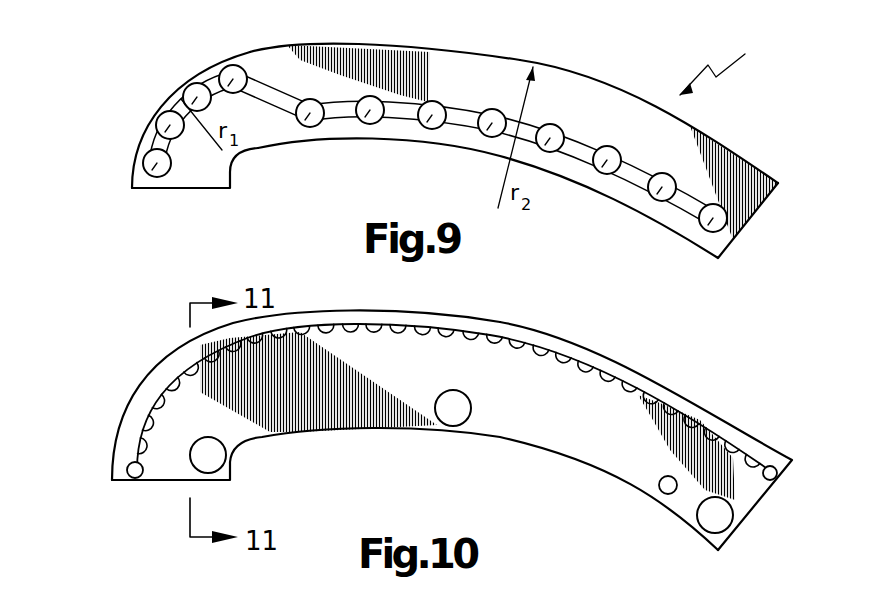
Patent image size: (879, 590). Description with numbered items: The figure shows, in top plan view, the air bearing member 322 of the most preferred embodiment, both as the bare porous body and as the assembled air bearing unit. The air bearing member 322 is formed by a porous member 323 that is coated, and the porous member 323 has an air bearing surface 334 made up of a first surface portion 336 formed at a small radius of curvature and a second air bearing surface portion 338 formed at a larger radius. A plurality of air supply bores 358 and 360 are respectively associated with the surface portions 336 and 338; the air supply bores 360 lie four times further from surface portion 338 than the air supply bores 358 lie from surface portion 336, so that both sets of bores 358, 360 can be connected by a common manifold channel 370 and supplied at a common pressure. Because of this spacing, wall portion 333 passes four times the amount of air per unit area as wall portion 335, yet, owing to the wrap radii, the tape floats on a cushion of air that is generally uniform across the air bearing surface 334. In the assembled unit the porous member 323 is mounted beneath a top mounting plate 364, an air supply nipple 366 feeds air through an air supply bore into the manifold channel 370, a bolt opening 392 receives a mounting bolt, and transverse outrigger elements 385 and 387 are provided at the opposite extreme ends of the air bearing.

In FIG. 9, the air bearing member 322 is at (733, 70).
In FIG. 9, the porous member 323 is at (514, 66).
In FIG. 9, the wall portion 333 is at (163, 100).
In FIG. 9, the air bearing surface 334 is at (433, 44).
In FIG. 10, the air bearing surface 334 is at (463, 332).
In FIG. 9, the wall portion 335 is at (387, 55).
In FIG. 9, the first surface portion 336 is at (167, 105).
In FIG. 10, the first surface portion 336 is at (163, 381).
In FIG. 9, the second air bearing surface portion 338 is at (601, 85).
In FIG. 10, the second air bearing surface portion 338 is at (683, 412).
In FIG. 9, the air supply bores 358 is at (232, 79).
In FIG. 9, the air supply bores 360 is at (447, 128).
In FIG. 10, the top mounting plate 364 is at (502, 436).
In FIG. 10, the air supply nipple 366 is at (664, 492).
In FIG. 9, the manifold channel 370 is at (267, 107).
In FIG. 10, the outrigger element 385 is at (131, 467).
In FIG. 10, the outrigger element 387 is at (778, 472).
In FIG. 10, the opening 392 is at (213, 460).